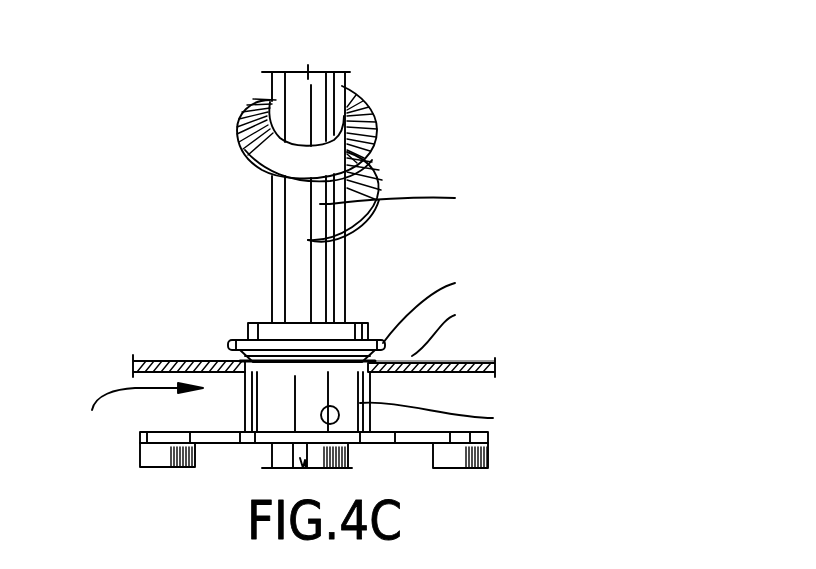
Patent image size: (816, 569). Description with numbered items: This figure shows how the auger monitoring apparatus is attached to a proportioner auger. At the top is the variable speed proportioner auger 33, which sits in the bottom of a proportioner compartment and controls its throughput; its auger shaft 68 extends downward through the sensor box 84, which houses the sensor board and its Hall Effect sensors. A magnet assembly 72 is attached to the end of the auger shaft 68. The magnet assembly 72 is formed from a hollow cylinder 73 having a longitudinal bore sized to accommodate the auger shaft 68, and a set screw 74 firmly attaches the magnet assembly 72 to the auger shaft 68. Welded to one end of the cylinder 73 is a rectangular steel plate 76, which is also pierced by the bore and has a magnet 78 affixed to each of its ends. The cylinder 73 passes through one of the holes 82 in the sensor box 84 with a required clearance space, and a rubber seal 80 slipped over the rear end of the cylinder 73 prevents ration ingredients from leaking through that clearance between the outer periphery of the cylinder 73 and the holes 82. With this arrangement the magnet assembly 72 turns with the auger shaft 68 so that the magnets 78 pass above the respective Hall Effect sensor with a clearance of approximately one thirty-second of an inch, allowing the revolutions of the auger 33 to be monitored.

The variable speed proportioner auger 33 is at (370, 121).
The auger shaft 68 is at (320, 290).
The rubber seal 80 is at (230, 348).
The holes in the sensor box 82 is at (470, 362).
The sensor box 84 is at (495, 370).
The magnet assembly 72 is at (136, 418).
The hollow cylinder 73 is at (245, 402).
The set screw 74 is at (333, 418).
The rectangular steel plate 76 is at (396, 440).
The magnet 78 is at (143, 457).